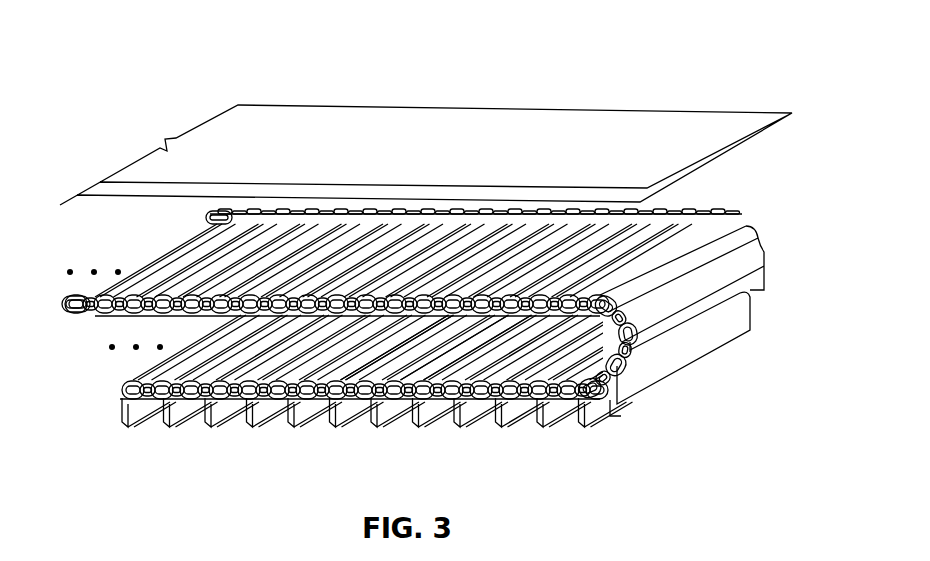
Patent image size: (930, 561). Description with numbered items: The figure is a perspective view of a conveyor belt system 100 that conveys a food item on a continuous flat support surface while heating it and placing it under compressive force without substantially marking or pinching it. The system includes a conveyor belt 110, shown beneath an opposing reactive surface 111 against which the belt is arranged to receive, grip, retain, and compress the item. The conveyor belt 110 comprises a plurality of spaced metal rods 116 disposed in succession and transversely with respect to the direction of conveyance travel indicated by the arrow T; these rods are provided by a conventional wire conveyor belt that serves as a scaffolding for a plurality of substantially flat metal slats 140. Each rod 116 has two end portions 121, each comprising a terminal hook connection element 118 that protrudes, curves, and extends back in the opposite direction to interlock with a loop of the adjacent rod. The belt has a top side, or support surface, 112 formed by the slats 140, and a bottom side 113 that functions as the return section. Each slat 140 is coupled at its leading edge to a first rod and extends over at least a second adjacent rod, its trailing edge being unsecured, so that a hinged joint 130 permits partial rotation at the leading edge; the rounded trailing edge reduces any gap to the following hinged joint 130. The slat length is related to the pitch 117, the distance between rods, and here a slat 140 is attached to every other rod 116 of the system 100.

The conveyor belt system 100 is at (670, 42).
The conveyor belt 110 is at (795, 220).
The reactive surface 111 is at (428, 155).
The top side (support surface) 112 is at (140, 258).
The bottom side 113 is at (216, 462).
The spaced metal rods 116 is at (598, 390).
The pitch 117 is at (346, 350).
The terminal hook connection element 118 is at (407, 383).
The end portion 121 is at (206, 218).
The hinged joint 130 is at (447, 378).
The metal slats 140 is at (658, 342).